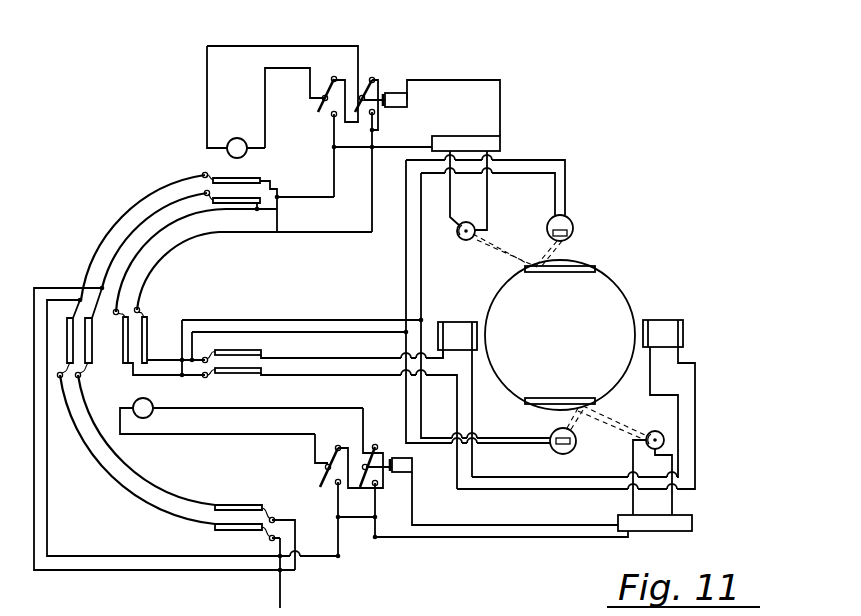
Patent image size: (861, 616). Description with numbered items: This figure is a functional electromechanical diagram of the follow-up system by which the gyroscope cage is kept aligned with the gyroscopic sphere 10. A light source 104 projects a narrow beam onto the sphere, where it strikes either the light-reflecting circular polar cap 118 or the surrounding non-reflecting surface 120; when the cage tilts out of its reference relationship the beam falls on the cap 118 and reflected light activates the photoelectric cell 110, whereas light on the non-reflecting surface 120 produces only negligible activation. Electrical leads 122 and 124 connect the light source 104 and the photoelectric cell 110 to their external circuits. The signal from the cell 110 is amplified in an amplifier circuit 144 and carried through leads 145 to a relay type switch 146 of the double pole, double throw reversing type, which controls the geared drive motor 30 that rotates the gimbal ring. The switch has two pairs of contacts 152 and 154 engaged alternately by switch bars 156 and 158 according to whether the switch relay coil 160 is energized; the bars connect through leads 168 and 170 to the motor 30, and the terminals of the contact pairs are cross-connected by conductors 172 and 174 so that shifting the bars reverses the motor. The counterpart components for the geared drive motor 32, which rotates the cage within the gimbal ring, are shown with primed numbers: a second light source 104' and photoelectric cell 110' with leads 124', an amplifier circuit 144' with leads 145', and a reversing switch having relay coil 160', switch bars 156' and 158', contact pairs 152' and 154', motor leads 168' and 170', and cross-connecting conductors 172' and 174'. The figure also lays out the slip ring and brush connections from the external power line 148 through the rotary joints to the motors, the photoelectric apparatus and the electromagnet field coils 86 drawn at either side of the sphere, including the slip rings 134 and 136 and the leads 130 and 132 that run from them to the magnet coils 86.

The gyroscopic sphere 10 is at (636, 299).
The geared drive motor 30 is at (228, 151).
The geared drive motor 32 is at (135, 404).
The electromagnet coil 86 is at (451, 322).
The light source 104 is at (585, 223).
The photoelectric cell 110 is at (460, 246).
The circular polar cap 118 is at (580, 267).
The non-reflecting surface 120 is at (590, 292).
The electrical leads 122 is at (567, 181).
The electrical leads 124 is at (492, 190).
The lead 130 is at (352, 358).
The lead 132 is at (378, 377).
The slip ring 134 is at (256, 349).
The slip ring 136 is at (252, 374).
The amplifier circuit 144 is at (495, 138).
The leads 145 is at (398, 128).
The relay type switch 146 is at (376, 80).
The external power line 148 is at (283, 600).
The contacts 152 is at (361, 129).
The contacts 154 is at (368, 53).
The switch bar 156 is at (301, 87).
The switch bar 158 is at (420, 96).
The switch relay coil 160 is at (432, 108).
The lead 168 is at (295, 98).
The lead 170 is at (282, 82).
The conductor 172 is at (335, 181).
The conductor 174 is at (307, 100).
The lead 170' is at (346, 436).
The lead 168' is at (300, 448).
The switch bar 156' is at (302, 473).
The conductor 174' is at (319, 480).
The contacts 154' is at (349, 432).
The conductor 172' is at (386, 453).
The switch relay coil 160' is at (492, 490).
The switch bar 158' is at (414, 489).
The contacts 152' is at (356, 518).
The leads 145' is at (501, 517).
The amplifier circuit 144' is at (679, 526).
The light source 104' is at (578, 451).
The photoelectric cell 110' is at (686, 472).
The electrical leads 124' is at (681, 498).